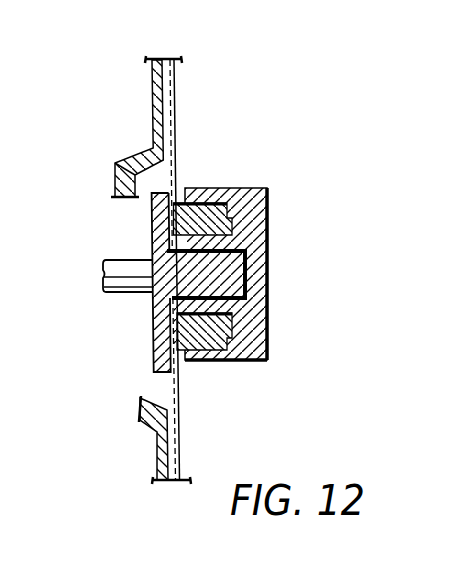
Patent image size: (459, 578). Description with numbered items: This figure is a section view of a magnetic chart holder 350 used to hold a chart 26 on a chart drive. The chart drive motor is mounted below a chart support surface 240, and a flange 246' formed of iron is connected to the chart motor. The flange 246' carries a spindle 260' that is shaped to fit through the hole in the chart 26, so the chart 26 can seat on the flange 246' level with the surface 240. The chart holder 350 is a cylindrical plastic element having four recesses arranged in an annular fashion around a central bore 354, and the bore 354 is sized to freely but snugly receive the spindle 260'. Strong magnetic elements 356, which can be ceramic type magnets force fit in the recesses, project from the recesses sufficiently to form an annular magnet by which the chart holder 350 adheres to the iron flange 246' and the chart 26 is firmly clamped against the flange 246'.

The chart 26 is at (176, 103).
The chart support surface 240 is at (113, 163).
The flange 246' is at (129, 293).
The spindle 260' is at (227, 292).
The chart holder 350 is at (267, 338).
The central bore 354 is at (268, 247).
The magnetic elements 356 is at (205, 200).